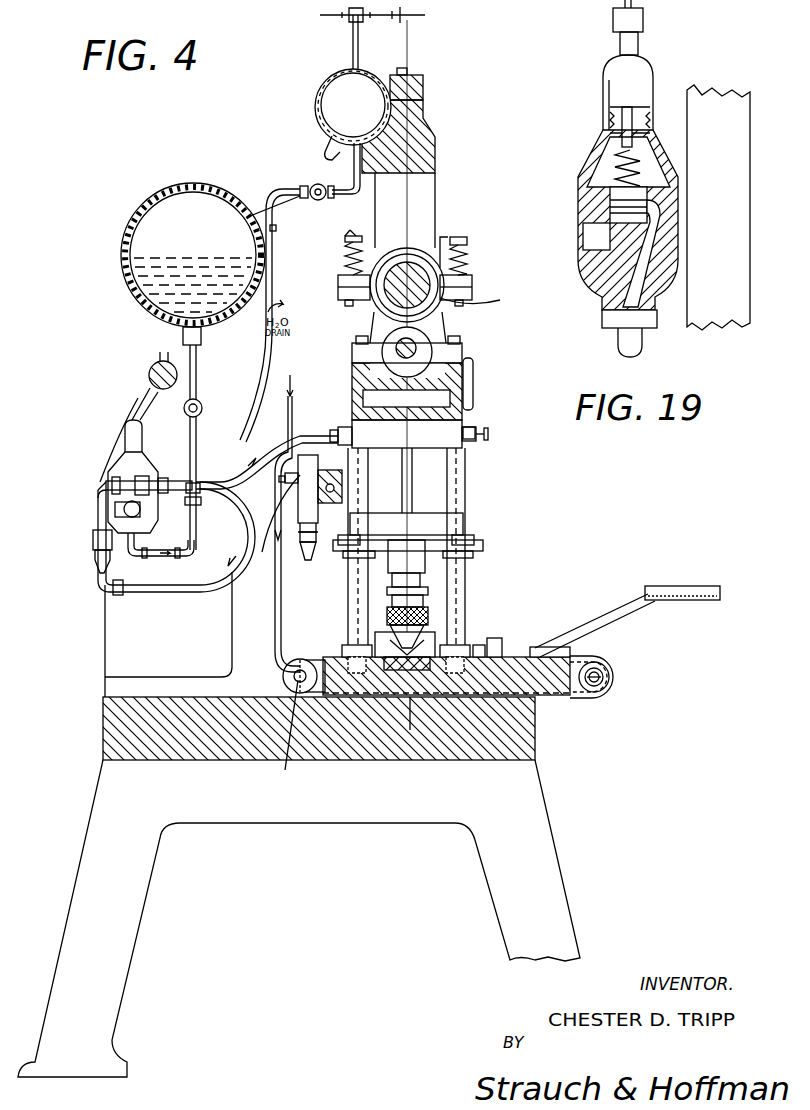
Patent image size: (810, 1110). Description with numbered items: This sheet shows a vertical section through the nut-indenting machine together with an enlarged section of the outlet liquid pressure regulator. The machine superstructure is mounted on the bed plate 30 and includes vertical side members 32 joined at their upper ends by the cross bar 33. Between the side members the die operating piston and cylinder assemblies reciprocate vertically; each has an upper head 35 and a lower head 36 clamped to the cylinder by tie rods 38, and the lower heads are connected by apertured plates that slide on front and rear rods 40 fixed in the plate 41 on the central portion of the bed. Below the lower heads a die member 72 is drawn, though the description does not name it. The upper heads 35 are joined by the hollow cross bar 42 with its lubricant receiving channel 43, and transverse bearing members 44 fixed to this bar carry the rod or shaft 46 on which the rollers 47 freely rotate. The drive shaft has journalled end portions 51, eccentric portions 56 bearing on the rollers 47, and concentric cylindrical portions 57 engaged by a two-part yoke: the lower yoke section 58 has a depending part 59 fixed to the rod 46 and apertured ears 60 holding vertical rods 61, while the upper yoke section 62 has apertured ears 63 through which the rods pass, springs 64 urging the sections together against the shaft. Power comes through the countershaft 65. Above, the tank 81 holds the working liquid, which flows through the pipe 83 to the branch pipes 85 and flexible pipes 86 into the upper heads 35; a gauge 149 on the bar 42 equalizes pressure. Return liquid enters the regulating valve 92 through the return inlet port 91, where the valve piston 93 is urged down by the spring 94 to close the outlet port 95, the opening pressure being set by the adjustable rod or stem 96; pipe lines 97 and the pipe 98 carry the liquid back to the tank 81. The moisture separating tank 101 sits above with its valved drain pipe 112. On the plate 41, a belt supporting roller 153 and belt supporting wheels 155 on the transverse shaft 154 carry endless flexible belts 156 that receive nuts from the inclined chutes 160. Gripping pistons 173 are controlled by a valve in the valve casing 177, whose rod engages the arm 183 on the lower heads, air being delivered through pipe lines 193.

In FIG. 4, the bed plate 30 is at (540, 729).
In FIG. 4, the vertical side members 32 is at (300, 188).
In FIG. 4, the cross bar 33 is at (437, 80).
In FIG. 4, the upper heads 35 is at (460, 445).
In FIG. 4, the lower heads 36 is at (465, 516).
In FIG. 4, the tie rods 38 is at (430, 465).
In FIG. 4, the front and rear rods 40 is at (346, 592).
In FIG. 4, the plate 41 is at (532, 650).
In FIG. 4, the hollow cross bar 42 is at (462, 393).
In FIG. 4, the lubricant receiving channel 43 is at (430, 350).
In FIG. 4, the transverse bearing members 44 is at (368, 330).
In FIG. 4, the rod or shaft 46 is at (470, 300).
In FIG. 4, the roller 47 is at (445, 272).
In FIG. 4, the end portions of the drive shaft 51 is at (355, 242).
In FIG. 4, the eccentric portion 56 is at (424, 264).
In FIG. 4, the cylindrical portions 57 is at (393, 268).
In FIG. 4, the lower yoke section 58 is at (388, 335).
In FIG. 4, the depending part 59 is at (365, 350).
In FIG. 4, the apertured ears 60 is at (338, 290).
In FIG. 4, the vertical rods 61 is at (480, 182).
In FIG. 4, the upper yoke section 62 is at (450, 236).
In FIG. 4, the apertured ears 63 is at (470, 262).
In FIG. 4, the springs 64 is at (345, 248).
In FIG. 4, the countershaft 65 is at (150, 368).
In FIG. 4, the ram 72 is at (424, 578).
In FIG. 4, the tank 81 is at (123, 240).
In FIG. 4, the pipe 83 is at (200, 362).
In FIG. 4, the branch pipes 85 is at (200, 592).
In FIG. 4, the flexible pipes 86 is at (272, 440).
In FIG. 19, the return inlet ports 91 is at (597, 258).
In FIG. 4, the return flow pressure regulating valves 92 is at (112, 463).
In FIG. 19, the valve piston 93 is at (648, 200).
In FIG. 19, the spring 94 is at (640, 170).
In FIG. 19, the outlet port 95 is at (660, 222).
In FIG. 19, the rod or stem 96 is at (623, 125).
In FIG. 4, the pipe lines 97 is at (152, 550).
In FIG. 19, the pipe lines 97 is at (640, 343).
In FIG. 4, the pipe 98 is at (188, 432).
In FIG. 4, the moisture separating tank 101 is at (342, 100).
In FIG. 4, the valved drain pipe 112 is at (305, 186).
In FIG. 4, the gauge 149 is at (478, 380).
In FIG. 4, the belt supporting roller 153 is at (612, 680).
In FIG. 4, the transverse shaft 154 is at (281, 737).
In FIG. 4, the belt supporting wheels 155 is at (300, 658).
In FIG. 4, the endless flexible belts 156 is at (578, 658).
In FIG. 4, the inclined chutes 160 is at (615, 618).
In FIG. 4, the pistons 173 is at (325, 472).
In FIG. 4, the valve casing 177 is at (274, 525).
In FIG. 4, the arm 183 is at (313, 548).
In FIG. 4, the pipe lines 193 is at (275, 625).